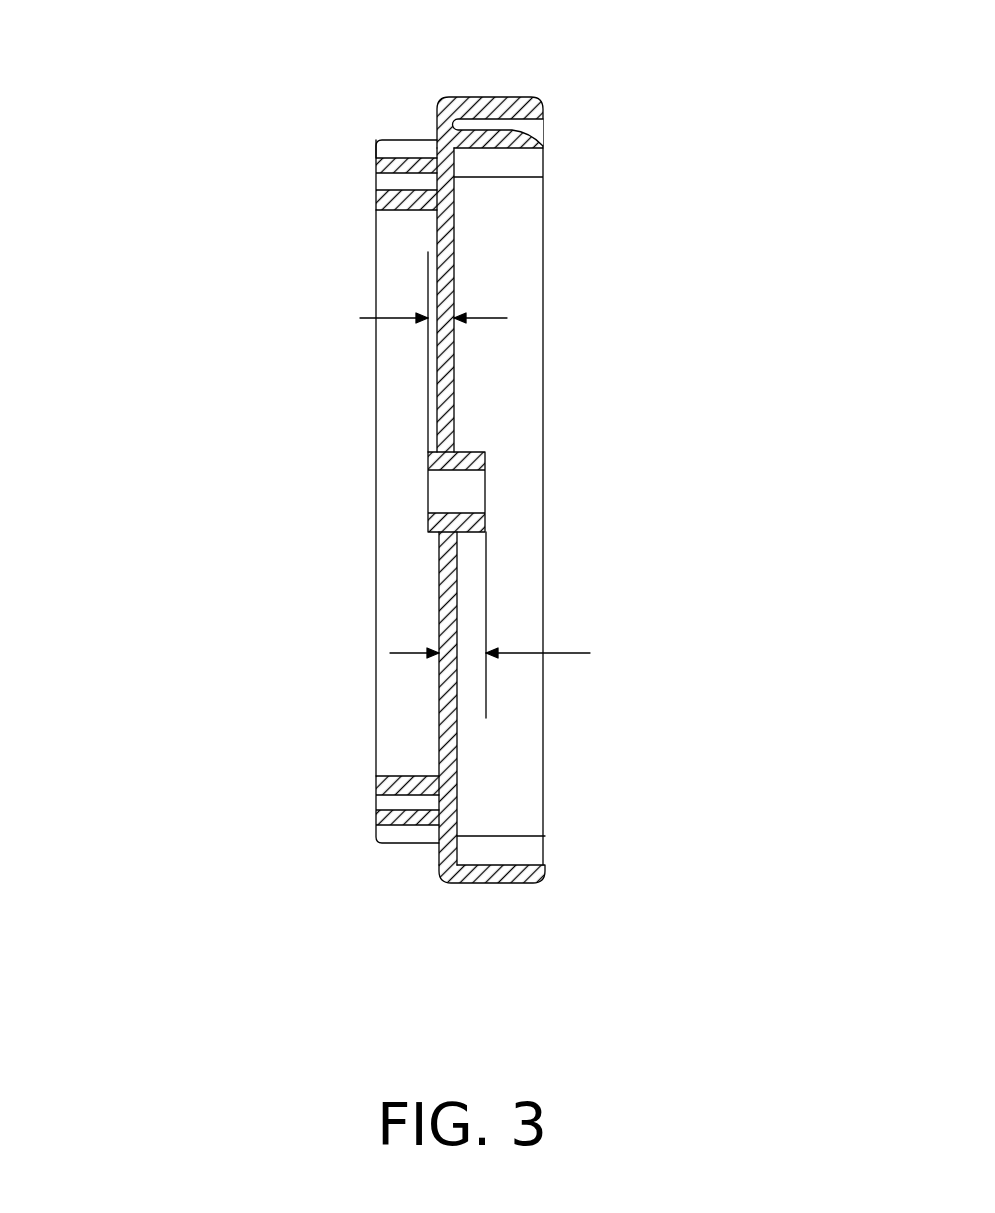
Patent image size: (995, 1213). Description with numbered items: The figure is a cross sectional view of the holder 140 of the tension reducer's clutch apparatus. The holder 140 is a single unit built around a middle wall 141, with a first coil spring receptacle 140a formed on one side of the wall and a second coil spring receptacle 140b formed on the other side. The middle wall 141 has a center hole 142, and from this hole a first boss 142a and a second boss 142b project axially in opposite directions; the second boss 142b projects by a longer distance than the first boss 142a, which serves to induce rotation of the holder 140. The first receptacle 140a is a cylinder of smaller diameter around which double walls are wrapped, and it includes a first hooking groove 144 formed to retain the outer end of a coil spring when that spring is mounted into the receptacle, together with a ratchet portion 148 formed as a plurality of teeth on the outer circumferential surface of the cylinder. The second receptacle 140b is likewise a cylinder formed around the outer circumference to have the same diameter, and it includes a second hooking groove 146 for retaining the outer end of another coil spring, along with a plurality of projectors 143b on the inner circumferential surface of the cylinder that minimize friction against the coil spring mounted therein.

The holder 140 is at (553, 787).
The first coil spring receptacle 140a is at (405, 386).
The second coil spring receptacle 140b is at (520, 325).
The middle wall 141 is at (453, 740).
The center hole 142 is at (467, 510).
The first boss 142a is at (428, 457).
The second boss 142b is at (472, 457).
The projectors 143b is at (512, 846).
The first hooking groove 144 is at (393, 183).
The second hooking groove 146 is at (540, 130).
The ratchet portion 148 is at (408, 148).